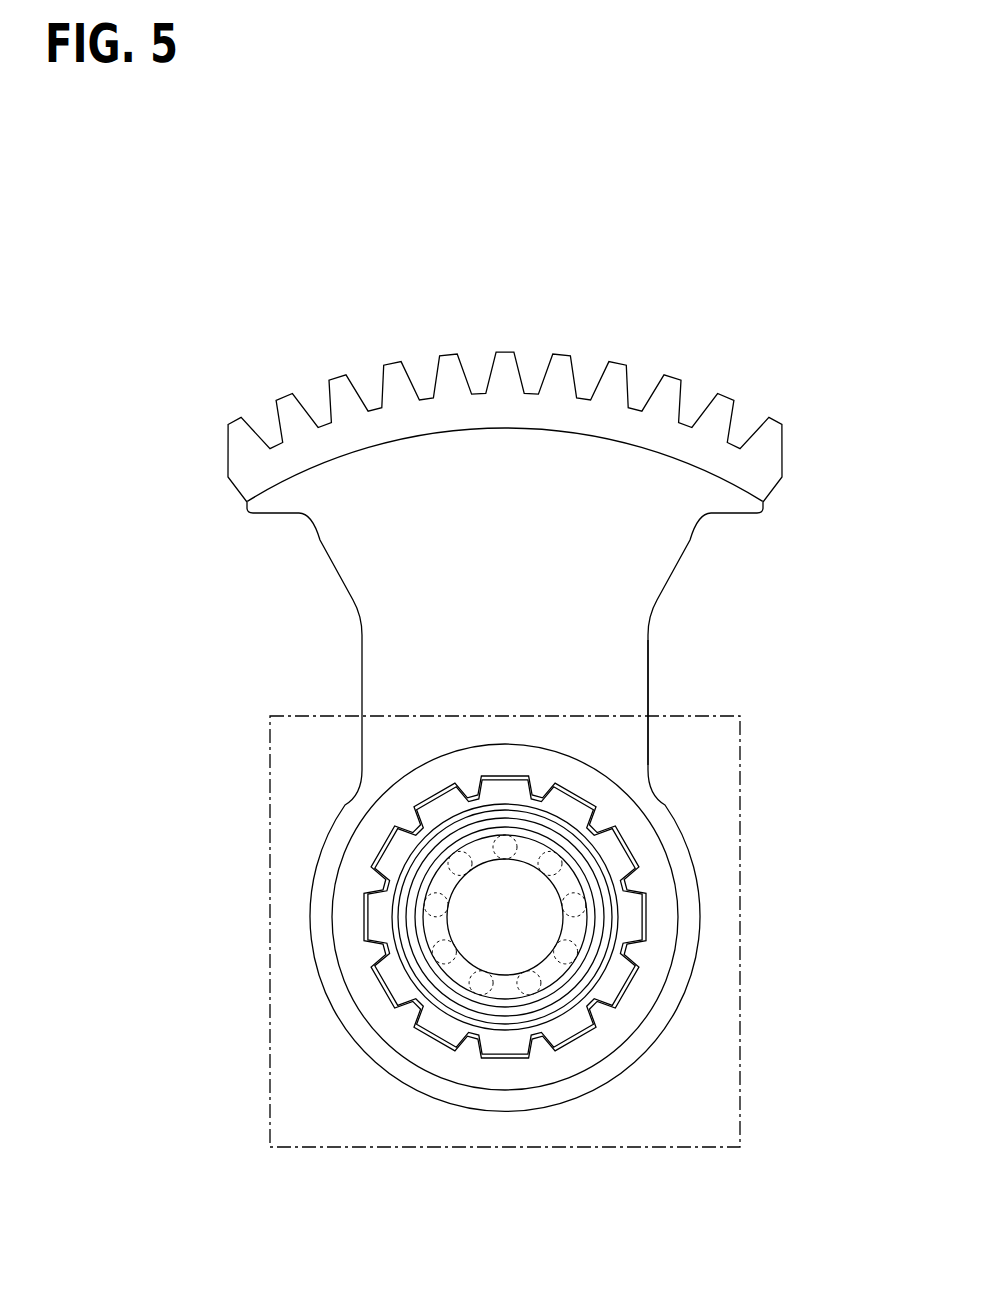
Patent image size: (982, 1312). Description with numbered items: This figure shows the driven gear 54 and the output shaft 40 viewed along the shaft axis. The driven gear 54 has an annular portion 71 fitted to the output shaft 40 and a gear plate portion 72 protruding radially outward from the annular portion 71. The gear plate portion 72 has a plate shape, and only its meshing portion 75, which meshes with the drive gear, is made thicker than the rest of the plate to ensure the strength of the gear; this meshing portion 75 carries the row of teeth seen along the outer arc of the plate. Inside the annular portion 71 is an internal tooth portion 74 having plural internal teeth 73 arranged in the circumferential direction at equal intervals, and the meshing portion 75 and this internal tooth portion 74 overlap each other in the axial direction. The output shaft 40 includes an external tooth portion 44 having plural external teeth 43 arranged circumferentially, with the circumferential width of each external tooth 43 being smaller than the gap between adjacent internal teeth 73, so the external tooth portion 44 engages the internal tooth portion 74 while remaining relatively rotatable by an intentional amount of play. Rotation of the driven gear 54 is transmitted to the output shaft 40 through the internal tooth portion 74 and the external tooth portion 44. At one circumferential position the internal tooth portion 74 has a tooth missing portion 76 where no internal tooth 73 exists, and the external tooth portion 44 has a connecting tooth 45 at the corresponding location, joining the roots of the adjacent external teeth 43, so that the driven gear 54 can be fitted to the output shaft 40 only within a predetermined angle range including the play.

The output shaft 40 is at (548, 1056).
The external teeth 43 is at (457, 792).
The external tooth portion 44 is at (505, 1052).
The connecting tooth 45 is at (500, 790).
The driven gear 54 is at (663, 623).
The annular portion 71 is at (322, 917).
The gear plate portion 72 is at (390, 638).
The internal teeth 73 is at (420, 815).
The internal tooth portion 74 is at (460, 1040).
The meshing portion 75 is at (505, 364).
The tooth missing portion 76 is at (582, 806).